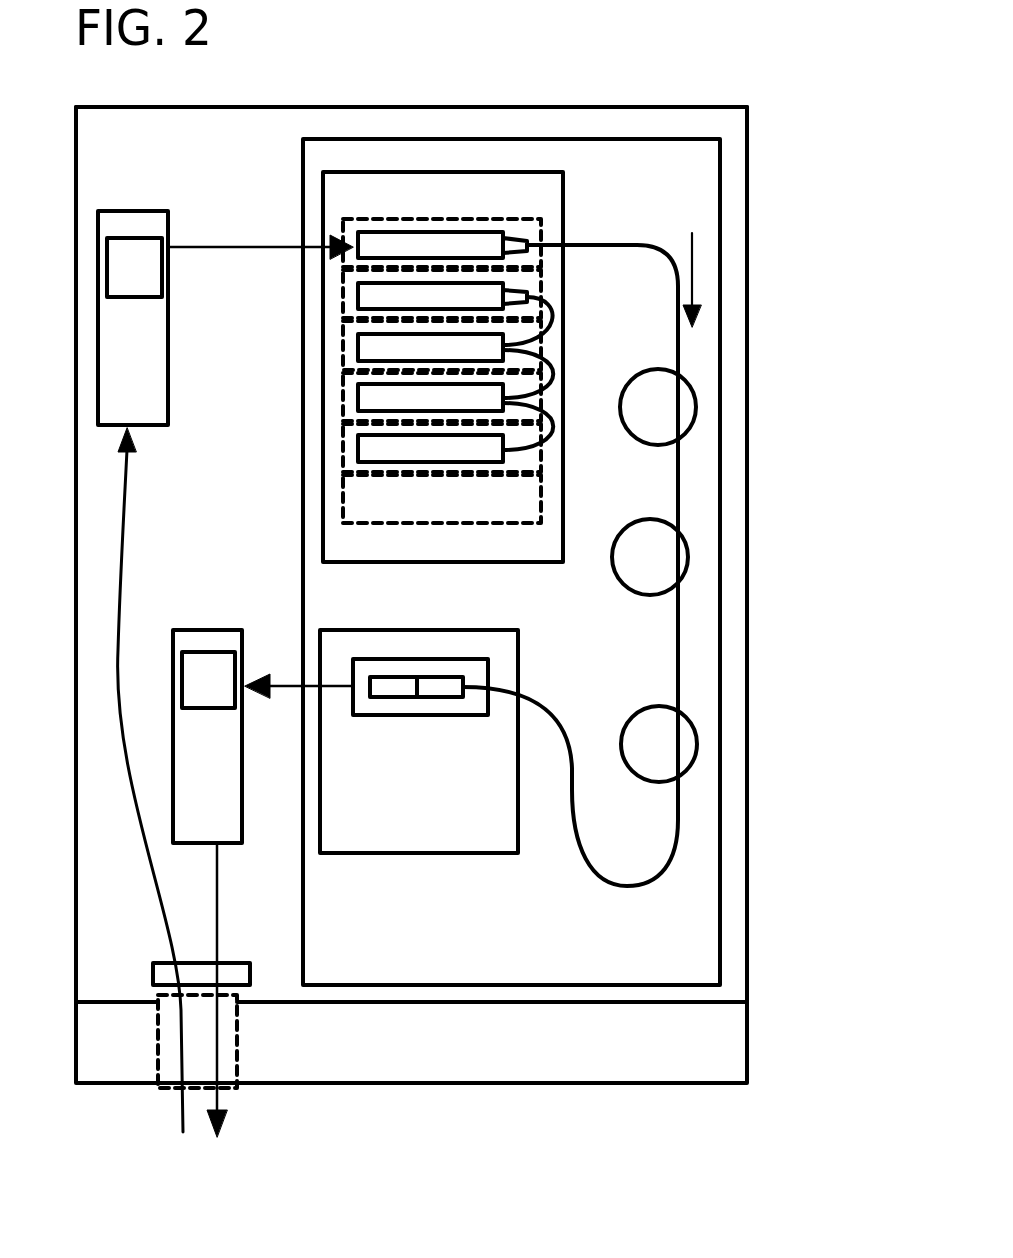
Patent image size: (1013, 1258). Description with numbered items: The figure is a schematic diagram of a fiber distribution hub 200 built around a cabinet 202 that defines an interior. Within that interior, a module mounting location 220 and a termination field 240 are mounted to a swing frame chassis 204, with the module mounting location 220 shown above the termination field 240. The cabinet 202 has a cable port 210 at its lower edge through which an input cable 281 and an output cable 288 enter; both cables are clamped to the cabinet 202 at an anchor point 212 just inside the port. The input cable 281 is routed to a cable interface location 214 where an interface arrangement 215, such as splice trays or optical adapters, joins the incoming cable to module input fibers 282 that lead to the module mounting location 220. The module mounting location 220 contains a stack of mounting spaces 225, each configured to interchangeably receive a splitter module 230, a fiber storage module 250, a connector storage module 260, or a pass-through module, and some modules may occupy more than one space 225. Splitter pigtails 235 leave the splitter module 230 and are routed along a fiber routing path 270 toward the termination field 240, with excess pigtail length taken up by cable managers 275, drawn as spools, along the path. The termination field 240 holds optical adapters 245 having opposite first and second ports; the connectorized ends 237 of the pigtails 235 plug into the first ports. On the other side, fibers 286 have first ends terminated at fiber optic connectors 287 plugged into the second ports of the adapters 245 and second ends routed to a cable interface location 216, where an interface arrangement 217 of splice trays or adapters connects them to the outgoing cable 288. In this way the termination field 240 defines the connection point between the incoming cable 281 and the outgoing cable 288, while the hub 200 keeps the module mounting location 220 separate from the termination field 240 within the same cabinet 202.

The fiber distribution hub 200 is at (752, 97).
The cabinet 202 is at (454, 96).
The swing frame chassis 204 is at (511, 524).
The cable port 210 is at (250, 1041).
The anchor point 212 is at (173, 958).
The cable interface location 214 is at (113, 363).
The interface arrangement 215 is at (116, 281).
The cable interface location 216 is at (187, 780).
The interface arrangement 217 is at (190, 693).
The module mounting location 220 is at (410, 209).
The mounting space 225 is at (486, 375).
The splitter module 230 is at (412, 260).
The splitter pigtails 235 is at (570, 565).
The connectorized ends 237 is at (457, 717).
The termination field 240 is at (400, 831).
The optical adapters 245 is at (420, 723).
The fiber storage module 250 is at (412, 362).
The connector storage module 260 is at (412, 412).
The fiber routing path 270 is at (686, 265).
The cable managers 275 is at (658, 407).
The input cable 281 is at (135, 780).
The module input fibers 282 is at (260, 232).
The fibers 286 is at (277, 638).
The fiber optic connectors 287 is at (379, 718).
The output cable 288 is at (220, 918).